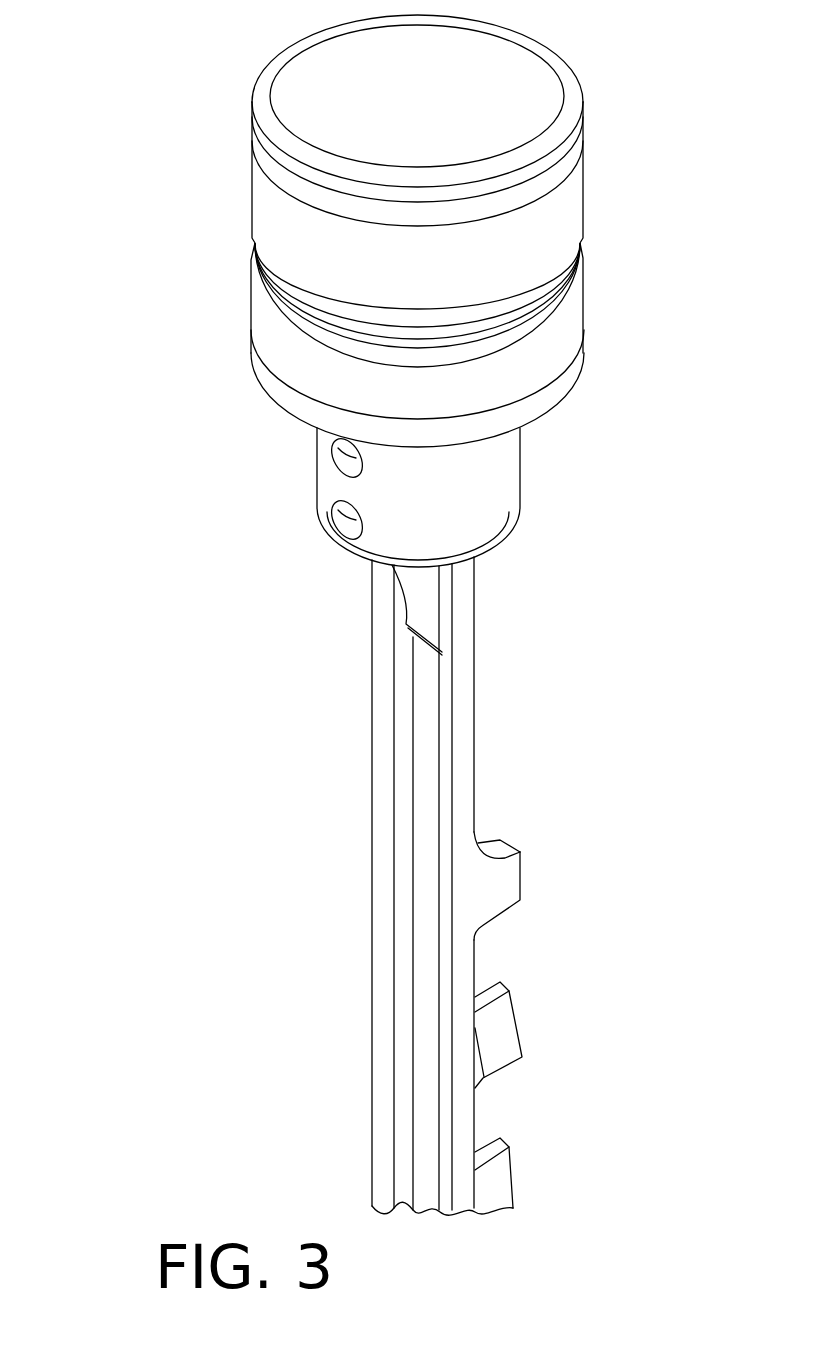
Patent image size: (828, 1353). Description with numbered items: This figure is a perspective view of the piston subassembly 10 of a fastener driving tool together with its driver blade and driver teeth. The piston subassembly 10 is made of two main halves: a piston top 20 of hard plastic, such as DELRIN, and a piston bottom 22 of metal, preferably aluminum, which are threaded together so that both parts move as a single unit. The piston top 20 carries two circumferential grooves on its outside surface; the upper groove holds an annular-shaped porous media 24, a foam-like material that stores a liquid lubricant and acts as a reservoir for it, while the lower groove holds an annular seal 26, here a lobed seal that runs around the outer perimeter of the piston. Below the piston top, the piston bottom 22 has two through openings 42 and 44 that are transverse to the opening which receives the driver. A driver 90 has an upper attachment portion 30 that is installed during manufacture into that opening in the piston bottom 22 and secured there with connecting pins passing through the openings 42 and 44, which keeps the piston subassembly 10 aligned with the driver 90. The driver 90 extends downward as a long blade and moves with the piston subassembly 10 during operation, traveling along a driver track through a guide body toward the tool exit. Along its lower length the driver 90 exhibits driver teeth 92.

The piston subassembly 10 is at (160, 400).
The piston top 20 is at (525, 92).
The piston bottom 22 is at (522, 448).
The annular-shaped porous media 24 is at (555, 213).
The annular seal 26 is at (570, 270).
The upper attachment portion 30 is at (427, 588).
The through opening 42 is at (352, 452).
The through opening 44 is at (352, 516).
The driver 90 is at (467, 810).
The driver teeth 92 is at (510, 885).